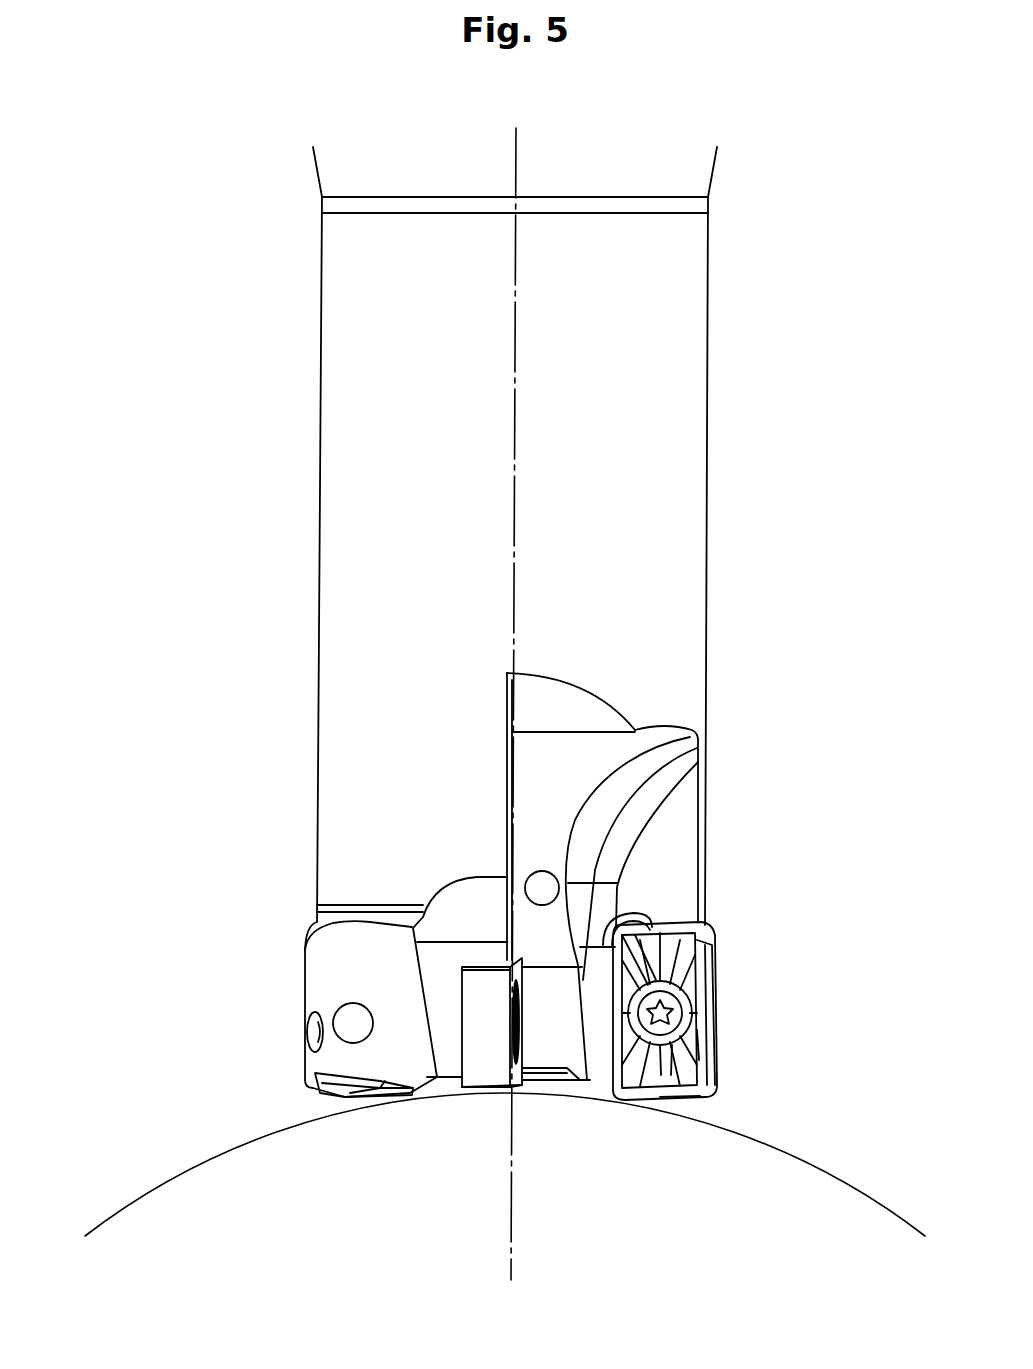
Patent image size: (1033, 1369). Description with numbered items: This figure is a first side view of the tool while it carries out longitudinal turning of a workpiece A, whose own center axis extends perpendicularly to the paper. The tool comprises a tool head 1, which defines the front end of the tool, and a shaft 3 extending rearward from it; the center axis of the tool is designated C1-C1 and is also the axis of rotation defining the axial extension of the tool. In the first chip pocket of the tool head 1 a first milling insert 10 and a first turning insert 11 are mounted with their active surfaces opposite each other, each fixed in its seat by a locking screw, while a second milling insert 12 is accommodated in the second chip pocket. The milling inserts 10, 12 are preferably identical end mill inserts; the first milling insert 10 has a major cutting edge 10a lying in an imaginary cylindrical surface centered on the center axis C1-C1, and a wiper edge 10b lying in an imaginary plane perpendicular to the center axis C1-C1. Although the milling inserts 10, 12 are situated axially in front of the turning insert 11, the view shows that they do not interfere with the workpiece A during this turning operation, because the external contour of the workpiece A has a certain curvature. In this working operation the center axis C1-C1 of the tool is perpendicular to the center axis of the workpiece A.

The tool head 1 is at (464, 1130).
The shaft 3 is at (726, 530).
The first milling insert 10 is at (724, 997).
The major cutting edge 10a is at (703, 1050).
The wiper edge 10b is at (677, 1097).
The first turning insert 11 is at (450, 1028).
The second milling insert 12 is at (310, 1102).
The workpiece A is at (175, 1170).
The center axis of the tool C1-C1 is at (513, 1229).